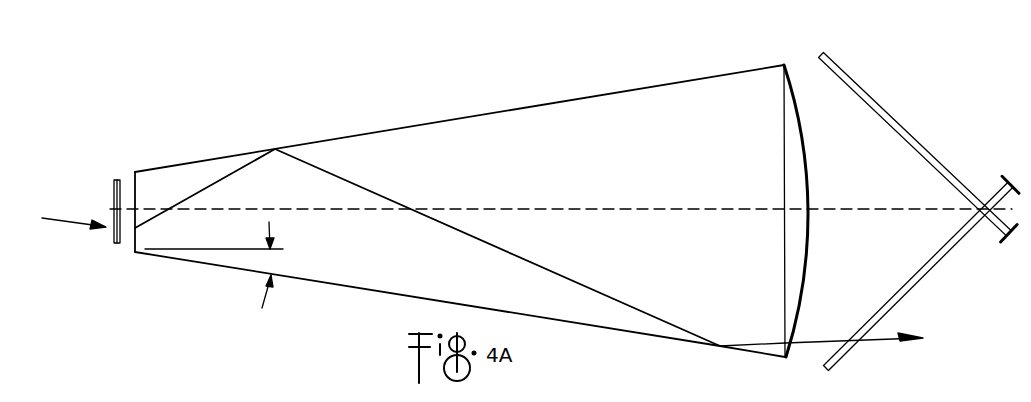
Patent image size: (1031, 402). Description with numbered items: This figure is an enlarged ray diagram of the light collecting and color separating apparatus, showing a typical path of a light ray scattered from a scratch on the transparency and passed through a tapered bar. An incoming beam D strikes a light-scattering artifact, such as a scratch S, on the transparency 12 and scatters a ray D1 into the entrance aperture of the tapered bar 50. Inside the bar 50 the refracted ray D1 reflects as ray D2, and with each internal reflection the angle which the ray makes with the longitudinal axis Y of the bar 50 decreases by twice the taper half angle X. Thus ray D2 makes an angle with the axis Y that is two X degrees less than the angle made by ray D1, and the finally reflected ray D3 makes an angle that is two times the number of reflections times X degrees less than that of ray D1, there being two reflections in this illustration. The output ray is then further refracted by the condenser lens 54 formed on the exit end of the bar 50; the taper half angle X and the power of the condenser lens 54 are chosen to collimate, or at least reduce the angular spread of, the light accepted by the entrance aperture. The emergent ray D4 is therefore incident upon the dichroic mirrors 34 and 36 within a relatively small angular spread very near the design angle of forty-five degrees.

The transparency 12 is at (113, 180).
The tapered bar 50 is at (396, 128).
The condenser lens 54 is at (806, 148).
The dichroic mirror 36 is at (855, 92).
The dichroic mirror 34 is at (840, 362).
The incoming beam D is at (70, 220).
The scattered ray D1 is at (230, 170).
The reflected ray D2 is at (342, 176).
The finally reflected ray D3 is at (758, 342).
The emergent ray D4 is at (822, 340).
The scratch S is at (113, 244).
The taper half angle X is at (214, 265).
The longitudinal axis Y is at (698, 211).